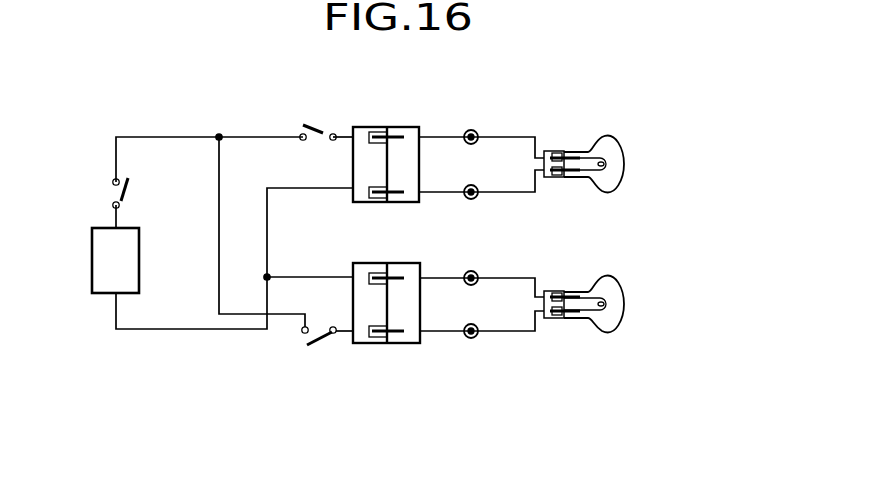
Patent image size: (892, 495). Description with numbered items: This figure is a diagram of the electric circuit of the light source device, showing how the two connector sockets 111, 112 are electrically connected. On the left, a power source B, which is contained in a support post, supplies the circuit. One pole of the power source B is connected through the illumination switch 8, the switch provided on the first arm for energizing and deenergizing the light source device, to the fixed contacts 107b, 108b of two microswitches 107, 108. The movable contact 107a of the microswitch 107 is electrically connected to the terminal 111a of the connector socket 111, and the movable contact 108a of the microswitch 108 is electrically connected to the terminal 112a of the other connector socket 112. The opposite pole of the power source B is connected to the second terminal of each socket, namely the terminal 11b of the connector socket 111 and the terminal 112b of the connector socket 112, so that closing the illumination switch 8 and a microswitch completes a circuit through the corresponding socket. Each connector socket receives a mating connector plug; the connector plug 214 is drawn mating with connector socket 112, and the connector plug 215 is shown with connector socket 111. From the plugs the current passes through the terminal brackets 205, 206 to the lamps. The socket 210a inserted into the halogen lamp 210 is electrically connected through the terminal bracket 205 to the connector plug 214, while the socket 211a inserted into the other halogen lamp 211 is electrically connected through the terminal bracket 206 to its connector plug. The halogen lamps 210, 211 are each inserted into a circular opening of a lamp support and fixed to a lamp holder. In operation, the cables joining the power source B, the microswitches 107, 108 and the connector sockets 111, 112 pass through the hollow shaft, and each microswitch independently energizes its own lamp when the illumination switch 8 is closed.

The illumination switch 8 is at (111, 197).
The power source B is at (139, 258).
The microswitch 107 is at (310, 120).
The movable contact 107a is at (322, 131).
The fixed contact 107b is at (300, 130).
The connector socket 111 is at (378, 126).
The terminal 111a is at (369, 142).
The relay coil terminal 11b is at (366, 199).
The relay contact 215 is at (413, 126).
The terminal bracket 206 is at (476, 130).
The halogen lamp 211 is at (612, 136).
The socket 211a is at (550, 150).
The connector socket 112 is at (372, 344).
The terminal 112a is at (370, 342).
The terminal 112b is at (368, 263).
The connector plug 214 is at (417, 344).
The microswitch 108 is at (312, 352).
The movable contact 108a is at (330, 338).
The fixed contact 108b is at (299, 332).
The terminal bracket 205 is at (478, 271).
The halogen lamp 210 is at (620, 308).
The socket 210a is at (547, 320).